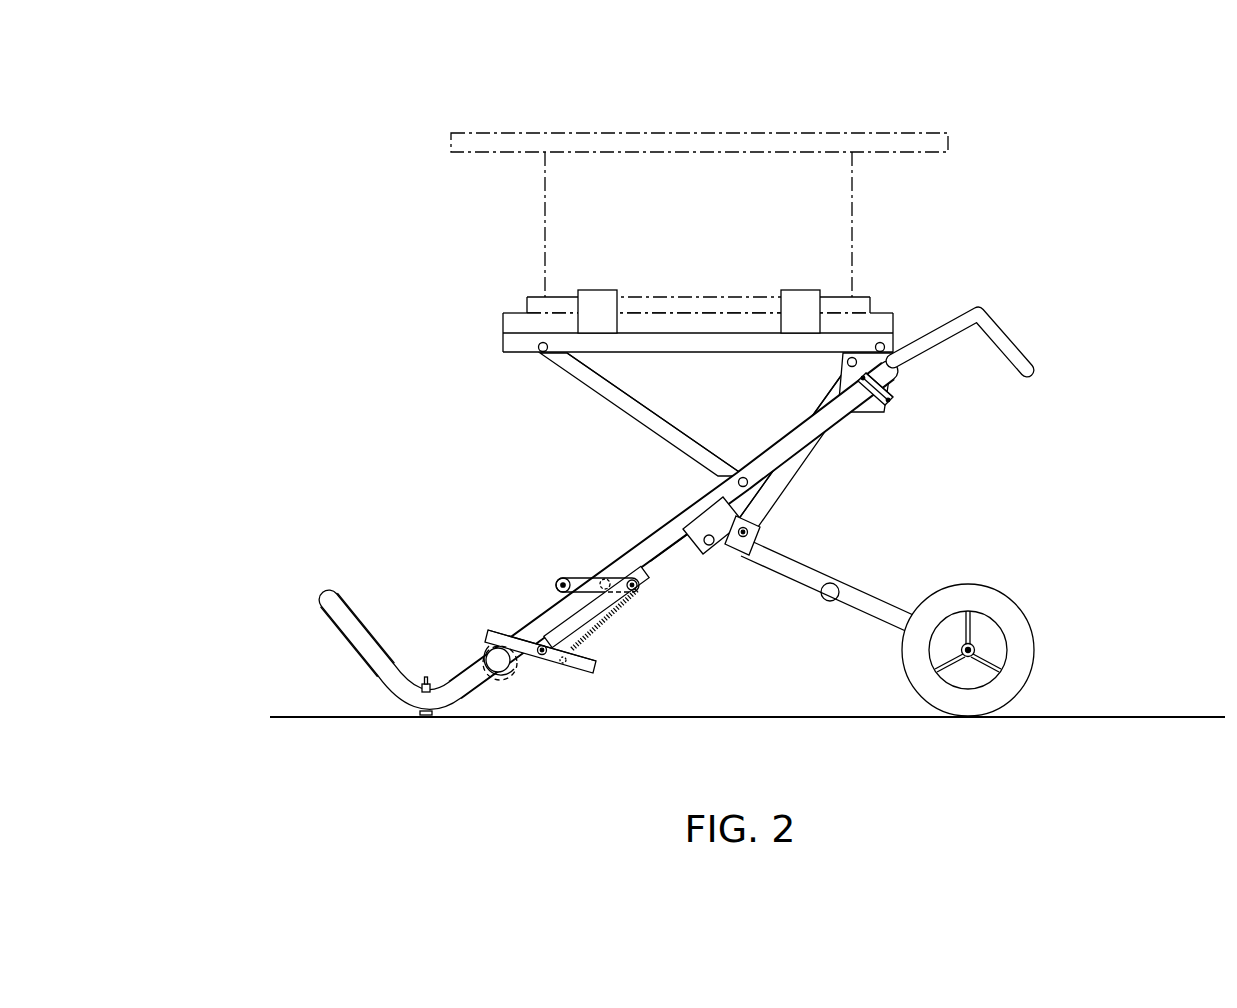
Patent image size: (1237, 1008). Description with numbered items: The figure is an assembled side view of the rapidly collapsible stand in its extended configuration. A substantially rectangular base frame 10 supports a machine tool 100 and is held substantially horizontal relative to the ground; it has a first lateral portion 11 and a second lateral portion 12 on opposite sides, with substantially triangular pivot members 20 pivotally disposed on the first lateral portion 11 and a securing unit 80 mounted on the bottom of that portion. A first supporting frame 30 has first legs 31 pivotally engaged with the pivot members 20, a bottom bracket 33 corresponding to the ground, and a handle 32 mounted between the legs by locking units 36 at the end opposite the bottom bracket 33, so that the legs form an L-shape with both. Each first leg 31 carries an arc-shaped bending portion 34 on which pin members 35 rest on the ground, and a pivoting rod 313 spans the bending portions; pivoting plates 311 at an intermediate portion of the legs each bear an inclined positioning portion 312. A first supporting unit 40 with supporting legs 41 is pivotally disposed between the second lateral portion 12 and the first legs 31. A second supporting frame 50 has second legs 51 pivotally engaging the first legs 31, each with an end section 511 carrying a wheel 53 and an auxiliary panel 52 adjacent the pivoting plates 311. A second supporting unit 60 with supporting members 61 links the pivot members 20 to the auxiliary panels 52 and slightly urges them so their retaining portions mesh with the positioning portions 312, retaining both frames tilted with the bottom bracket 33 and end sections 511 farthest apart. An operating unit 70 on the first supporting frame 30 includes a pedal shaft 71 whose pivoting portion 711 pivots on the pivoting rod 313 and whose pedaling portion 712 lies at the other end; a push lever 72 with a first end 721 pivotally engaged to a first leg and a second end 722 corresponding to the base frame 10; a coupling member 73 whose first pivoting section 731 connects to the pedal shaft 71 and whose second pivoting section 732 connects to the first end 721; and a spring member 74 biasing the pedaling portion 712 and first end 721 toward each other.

The machine tool 100 is at (907, 133).
The base frame 10 is at (494, 343).
The first lateral portion 11 is at (893, 346).
The second lateral portion 12 is at (525, 342).
The pivot member 20 is at (900, 382).
The first supporting frame 30 is at (467, 714).
The first leg 31 is at (758, 465).
The pivoting plate 311 is at (672, 600).
The positioning portion 312 is at (706, 556).
The pivoting rod 313 is at (507, 676).
The handle 32 is at (1035, 368).
The bottom bracket 33 is at (320, 596).
The bending portion 34 is at (407, 703).
The pin member 35 is at (426, 716).
The locking unit 36 is at (887, 398).
The first supporting unit 40 is at (555, 378).
The supporting leg 41 is at (596, 388).
The second supporting frame 50 is at (843, 622).
The second leg 51 is at (862, 592).
The end section 511 is at (975, 645).
The auxiliary panel 52 is at (758, 544).
The wheel 53 is at (1034, 655).
The second supporting unit 60 is at (803, 474).
The supporting member 61 is at (775, 492).
The operating unit 70 is at (505, 617).
The pedal shaft 71 is at (512, 628).
The pivoting portion 711 is at (482, 637).
The pedaling portion 712 is at (580, 652).
The push lever 72 is at (586, 577).
The first end 721 is at (634, 580).
The second end 722 is at (562, 578).
The coupling member 73 is at (590, 661).
The first pivoting section 731 is at (563, 663).
The second pivoting section 732 is at (606, 578).
The spring member 74 is at (630, 615).
The securing unit 80 is at (897, 366).